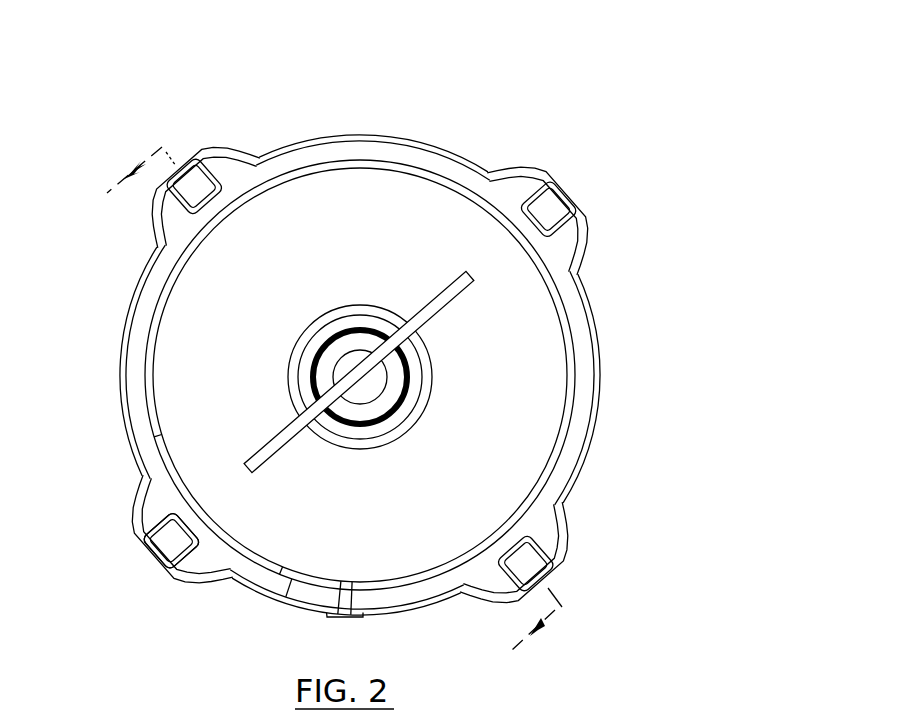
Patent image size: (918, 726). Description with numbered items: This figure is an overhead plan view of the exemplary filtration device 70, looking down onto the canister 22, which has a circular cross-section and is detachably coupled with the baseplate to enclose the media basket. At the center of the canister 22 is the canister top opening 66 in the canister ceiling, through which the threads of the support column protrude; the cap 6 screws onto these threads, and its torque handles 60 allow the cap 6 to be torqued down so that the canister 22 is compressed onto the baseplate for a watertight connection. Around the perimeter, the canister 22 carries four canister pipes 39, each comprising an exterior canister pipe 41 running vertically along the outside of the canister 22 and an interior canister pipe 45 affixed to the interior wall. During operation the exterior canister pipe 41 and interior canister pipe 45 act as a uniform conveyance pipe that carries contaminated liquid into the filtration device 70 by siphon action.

The cap 6 is at (339, 354).
The canister 22 is at (360, 353).
The canister pipes 39 is at (344, 354).
The exterior canister pipe 41 is at (158, 532).
The interior canister pipe 45 is at (217, 529).
The torque handles 60 is at (378, 371).
The canister top opening 66 is at (409, 397).
The filtration device 70 is at (557, 115).